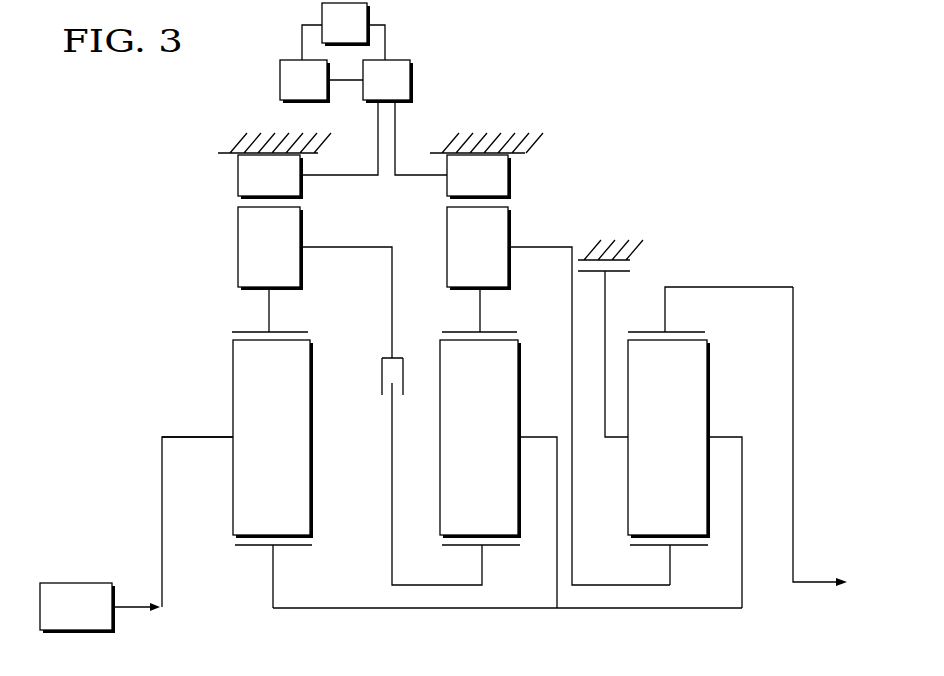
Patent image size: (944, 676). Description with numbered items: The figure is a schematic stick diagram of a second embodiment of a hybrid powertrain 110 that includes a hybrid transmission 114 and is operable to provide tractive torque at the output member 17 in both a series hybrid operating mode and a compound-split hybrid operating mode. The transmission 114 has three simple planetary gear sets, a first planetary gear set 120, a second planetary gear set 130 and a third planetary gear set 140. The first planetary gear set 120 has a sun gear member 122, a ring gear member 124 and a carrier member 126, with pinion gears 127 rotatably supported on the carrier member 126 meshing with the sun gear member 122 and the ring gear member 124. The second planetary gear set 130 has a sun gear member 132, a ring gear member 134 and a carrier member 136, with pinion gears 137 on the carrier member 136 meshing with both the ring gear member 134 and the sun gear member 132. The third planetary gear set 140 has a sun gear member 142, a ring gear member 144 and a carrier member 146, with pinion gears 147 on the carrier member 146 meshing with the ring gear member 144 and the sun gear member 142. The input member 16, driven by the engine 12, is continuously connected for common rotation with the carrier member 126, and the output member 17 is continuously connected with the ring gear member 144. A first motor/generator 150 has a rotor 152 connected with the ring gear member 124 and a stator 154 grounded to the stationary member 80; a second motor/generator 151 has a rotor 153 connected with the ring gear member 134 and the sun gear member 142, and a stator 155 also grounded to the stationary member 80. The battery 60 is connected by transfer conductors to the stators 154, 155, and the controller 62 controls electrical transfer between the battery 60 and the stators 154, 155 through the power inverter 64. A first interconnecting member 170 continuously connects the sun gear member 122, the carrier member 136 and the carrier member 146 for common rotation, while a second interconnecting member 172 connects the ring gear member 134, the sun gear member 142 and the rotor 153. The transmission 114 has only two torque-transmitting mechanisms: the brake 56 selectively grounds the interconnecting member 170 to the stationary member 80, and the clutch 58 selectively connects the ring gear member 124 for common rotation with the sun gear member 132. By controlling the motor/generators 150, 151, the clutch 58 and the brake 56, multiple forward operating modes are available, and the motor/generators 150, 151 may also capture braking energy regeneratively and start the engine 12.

The engine 12 is at (65, 617).
The input member 16 is at (135, 606).
The output member 17 is at (809, 582).
The brake 56 is at (642, 264).
The clutch 58 is at (384, 404).
The battery 60 is at (333, 33).
The controller 62 is at (292, 90).
The power inverter 64 is at (375, 90).
The stationary member 80 is at (236, 144).
The hybrid powertrain 110 is at (100, 320).
The hybrid transmission 114 is at (684, 157).
The first planetary gear set 120 is at (245, 468).
The sun gear member 122 is at (293, 546).
The ring gear member 124 is at (250, 330).
The carrier member 126 is at (197, 435).
The pinion gears 127 is at (255, 450).
The second planetary gear set 130 is at (489, 466).
The sun gear member 132 is at (495, 546).
The ring gear member 134 is at (489, 330).
The carrier member 136 is at (537, 436).
The pinion gears 137 is at (463, 450).
The third planetary gear set 140 is at (650, 446).
The sun gear member 142 is at (683, 547).
The ring gear member 144 is at (648, 330).
The carrier member 146 is at (725, 437).
The pinion gears 147 is at (652, 450).
The first motor/generator 150 is at (230, 222).
The second motor/generator 151 is at (433, 222).
The rotor 152 is at (254, 257).
The rotor 153 is at (462, 257).
The stator 154 is at (254, 186).
The stator 155 is at (462, 186).
The first interconnecting member 170 is at (520, 609).
The second interconnecting member 172 is at (646, 609).